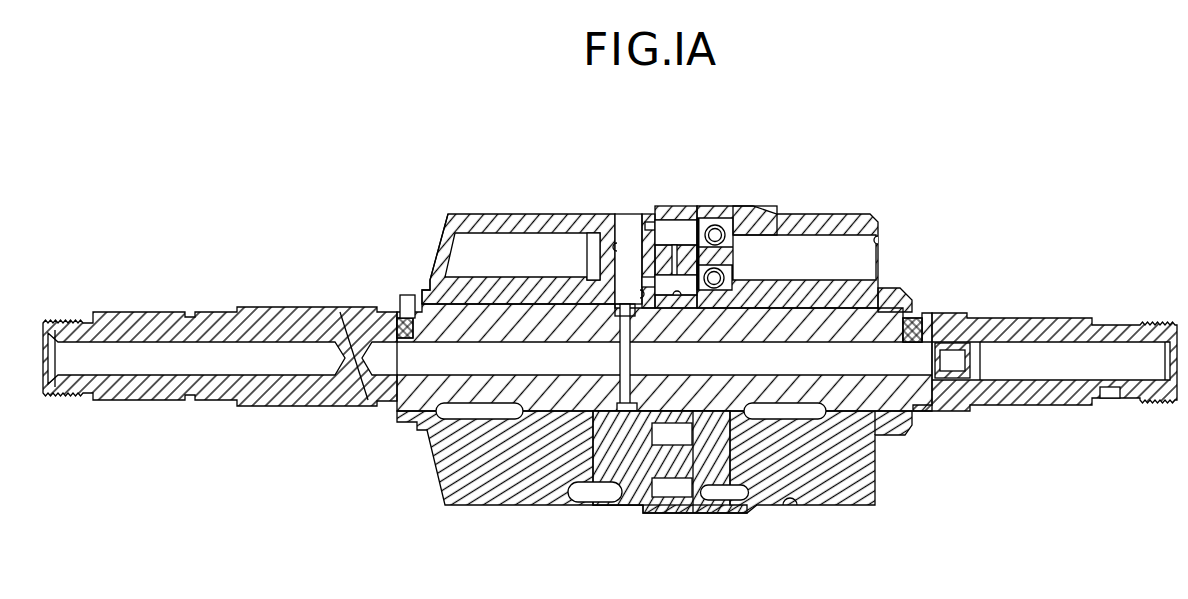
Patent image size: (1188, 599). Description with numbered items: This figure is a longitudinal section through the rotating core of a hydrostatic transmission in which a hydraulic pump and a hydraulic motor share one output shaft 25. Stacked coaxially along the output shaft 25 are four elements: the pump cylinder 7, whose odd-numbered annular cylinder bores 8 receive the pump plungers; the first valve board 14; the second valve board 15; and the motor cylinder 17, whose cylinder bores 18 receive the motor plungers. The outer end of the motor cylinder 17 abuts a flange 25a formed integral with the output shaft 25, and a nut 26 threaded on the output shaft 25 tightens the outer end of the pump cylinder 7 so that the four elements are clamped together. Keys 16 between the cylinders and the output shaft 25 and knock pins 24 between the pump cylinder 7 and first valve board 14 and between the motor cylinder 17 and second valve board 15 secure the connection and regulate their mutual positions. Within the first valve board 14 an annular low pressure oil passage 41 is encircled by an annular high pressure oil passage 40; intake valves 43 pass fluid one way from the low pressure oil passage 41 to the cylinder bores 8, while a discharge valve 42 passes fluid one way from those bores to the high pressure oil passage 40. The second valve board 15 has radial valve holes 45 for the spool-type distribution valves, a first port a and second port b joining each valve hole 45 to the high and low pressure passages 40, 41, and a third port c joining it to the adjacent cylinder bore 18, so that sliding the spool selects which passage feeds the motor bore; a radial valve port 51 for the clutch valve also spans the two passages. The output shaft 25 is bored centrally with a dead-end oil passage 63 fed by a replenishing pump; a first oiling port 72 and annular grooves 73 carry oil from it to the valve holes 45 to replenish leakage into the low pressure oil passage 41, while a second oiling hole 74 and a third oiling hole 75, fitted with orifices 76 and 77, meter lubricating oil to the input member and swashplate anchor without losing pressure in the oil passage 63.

The pump cylinder 7 is at (833, 214).
The cylinder bores 8 is at (880, 243).
The first valve board 14 is at (712, 214).
The second valve board 15 is at (605, 218).
The keys 16 is at (477, 404).
The motor cylinder 17 is at (511, 214).
The cylinder bores 18 is at (441, 250).
The knock pins 24 is at (585, 505).
The output shaft 25 is at (320, 312).
The flange 25a is at (407, 426).
The nut 26 is at (906, 300).
The high pressure oil passage 40 is at (684, 222).
The low pressure oil passage 41 is at (684, 303).
The discharge valve 42 is at (727, 240).
The intake valves 43 is at (736, 280).
The valve holes 45 is at (621, 222).
The valve port 51 is at (669, 212).
The oil passage 63 is at (708, 373).
The first oiling port 72 is at (627, 340).
The annular grooves 73 is at (618, 320).
The second oiling hole 74 is at (918, 343).
The third oiling hole 75 is at (405, 340).
The orifice 76 is at (916, 324).
The orifice 77 is at (400, 312).
The first port a is at (648, 222).
The second port b is at (639, 294).
The third port c is at (618, 247).